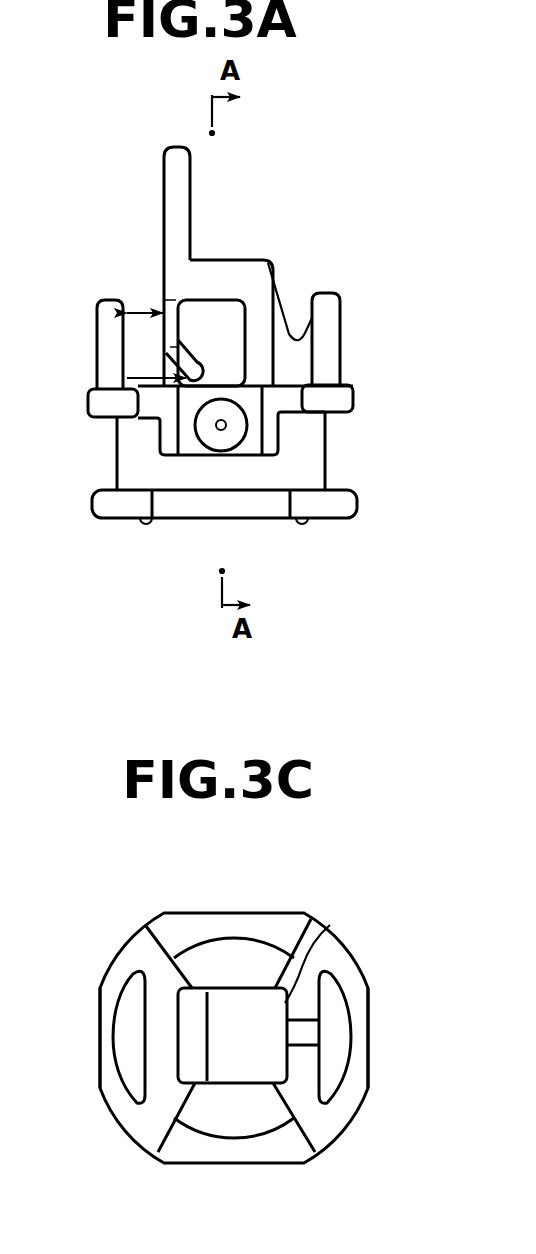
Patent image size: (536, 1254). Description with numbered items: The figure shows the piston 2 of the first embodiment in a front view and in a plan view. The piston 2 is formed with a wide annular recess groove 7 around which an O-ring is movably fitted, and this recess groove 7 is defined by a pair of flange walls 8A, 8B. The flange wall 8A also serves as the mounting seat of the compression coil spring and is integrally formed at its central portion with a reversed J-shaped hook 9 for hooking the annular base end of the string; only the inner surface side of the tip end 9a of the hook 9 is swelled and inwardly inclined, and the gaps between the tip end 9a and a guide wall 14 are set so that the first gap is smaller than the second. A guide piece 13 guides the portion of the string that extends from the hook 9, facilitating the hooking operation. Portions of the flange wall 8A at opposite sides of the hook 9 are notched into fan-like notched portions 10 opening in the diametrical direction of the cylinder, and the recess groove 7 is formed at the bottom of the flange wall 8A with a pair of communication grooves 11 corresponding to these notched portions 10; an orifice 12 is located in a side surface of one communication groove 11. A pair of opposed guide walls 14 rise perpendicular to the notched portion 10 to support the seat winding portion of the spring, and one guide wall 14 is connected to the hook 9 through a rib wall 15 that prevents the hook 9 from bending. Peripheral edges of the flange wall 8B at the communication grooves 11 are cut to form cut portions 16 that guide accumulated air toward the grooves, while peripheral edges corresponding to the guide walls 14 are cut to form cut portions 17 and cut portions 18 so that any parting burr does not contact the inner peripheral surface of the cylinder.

In FIG. 3A, the piston 2 is at (122, 231).
In FIG. 3C, the piston 2 is at (120, 903).
In FIG. 3A, the recess groove 7 is at (343, 462).
In FIG. 3C, the recess groove 7 is at (268, 1145).
In FIG. 3A, the flange wall 8A is at (331, 390).
In FIG. 3C, the flange wall 8A is at (313, 1125).
In FIG. 3A, the flange wall 8B is at (122, 512).
In FIG. 3C, the flange wall 8B is at (273, 918).
In FIG. 3A, the hook 9 is at (227, 270).
In FIG. 3C, the hook 9 is at (318, 936).
In FIG. 3A, the tip end 9a is at (191, 362).
In FIG. 3A, the notched portion 10 is at (156, 409).
In FIG. 3C, the notched portion 10 is at (203, 956).
In FIG. 3A, the communication groove 11 is at (193, 447).
In FIG. 3A, the orifice 12 is at (222, 430).
In FIG. 3C, the orifice 12 is at (192, 1065).
In FIG. 3A, the guide piece 13 is at (182, 183).
In FIG. 3A, the guide wall 14 is at (110, 303).
In FIG. 3C, the guide wall 14 is at (338, 1060).
In FIG. 3A, the rib wall 15 is at (277, 332).
In FIG. 3C, the rib wall 15 is at (300, 1020).
In FIG. 3A, the cut portion 16 is at (227, 500).
In FIG. 3C, the cut portion 16 is at (240, 913).
In FIG. 3A, the cut portion 17 is at (357, 502).
In FIG. 3A, the cut portion 18 is at (353, 398).
In FIG. 3C, the cut portion 18 is at (368, 1028).